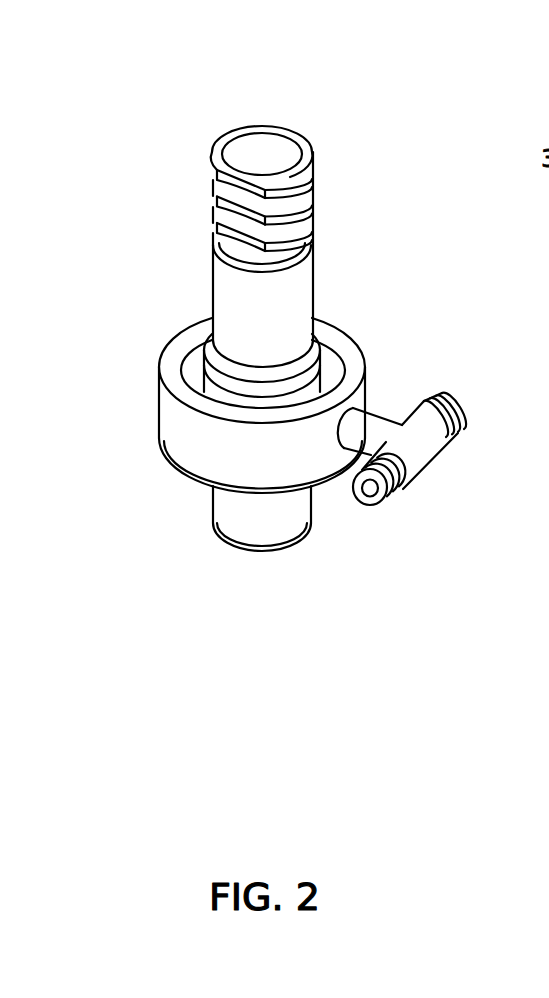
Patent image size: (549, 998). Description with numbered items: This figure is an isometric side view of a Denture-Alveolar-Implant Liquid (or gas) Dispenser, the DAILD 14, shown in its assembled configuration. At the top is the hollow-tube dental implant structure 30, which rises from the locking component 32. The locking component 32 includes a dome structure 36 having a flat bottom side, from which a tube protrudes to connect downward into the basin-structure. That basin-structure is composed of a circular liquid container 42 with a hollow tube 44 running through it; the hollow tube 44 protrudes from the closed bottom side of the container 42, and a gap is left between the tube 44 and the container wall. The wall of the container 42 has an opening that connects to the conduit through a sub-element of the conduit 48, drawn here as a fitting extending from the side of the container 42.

The DAILD 14 is at (175, 103).
The hollow-tube dental implant structure 30 is at (214, 200).
The locking component 32 is at (548, 80).
The dome structure 36 is at (203, 374).
The circular liquid container 42 is at (197, 428).
The hollow tube 44 is at (232, 523).
The sub-element of the conduit 48 is at (425, 451).